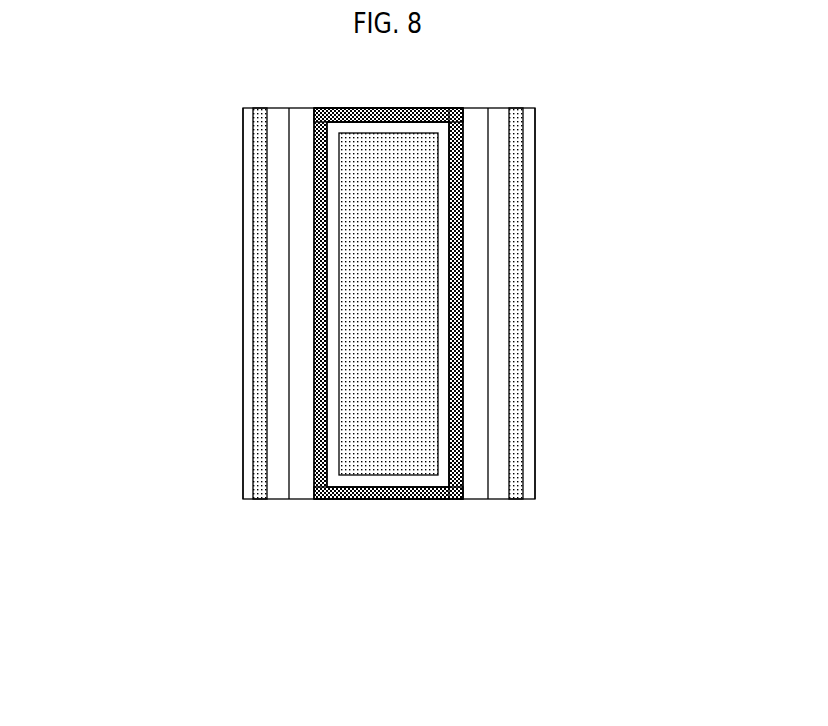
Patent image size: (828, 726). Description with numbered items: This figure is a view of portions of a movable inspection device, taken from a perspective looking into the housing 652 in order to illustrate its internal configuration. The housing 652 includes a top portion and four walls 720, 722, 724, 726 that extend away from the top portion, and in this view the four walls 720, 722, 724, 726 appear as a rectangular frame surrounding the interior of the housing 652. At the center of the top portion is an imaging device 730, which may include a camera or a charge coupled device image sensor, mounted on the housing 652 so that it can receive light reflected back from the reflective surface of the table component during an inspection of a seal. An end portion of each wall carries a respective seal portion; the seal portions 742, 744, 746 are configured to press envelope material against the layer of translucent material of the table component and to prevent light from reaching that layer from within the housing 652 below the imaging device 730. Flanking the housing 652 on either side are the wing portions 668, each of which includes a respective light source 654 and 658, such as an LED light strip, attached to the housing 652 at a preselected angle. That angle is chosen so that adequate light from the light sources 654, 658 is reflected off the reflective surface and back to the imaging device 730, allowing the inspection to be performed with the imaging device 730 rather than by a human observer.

The housing 652 is at (222, 154).
The light source 654 is at (260, 425).
The light source 658 is at (518, 425).
The wing portion 668 is at (243, 359).
The wall 720 is at (315, 240).
The wall 722 is at (320, 349).
The wall 724 is at (372, 109).
The wall 726 is at (412, 498).
The imaging device 730 is at (415, 309).
The seal portion 742 is at (457, 347).
The seal portion 744 is at (425, 116).
The seal portion 746 is at (358, 492).